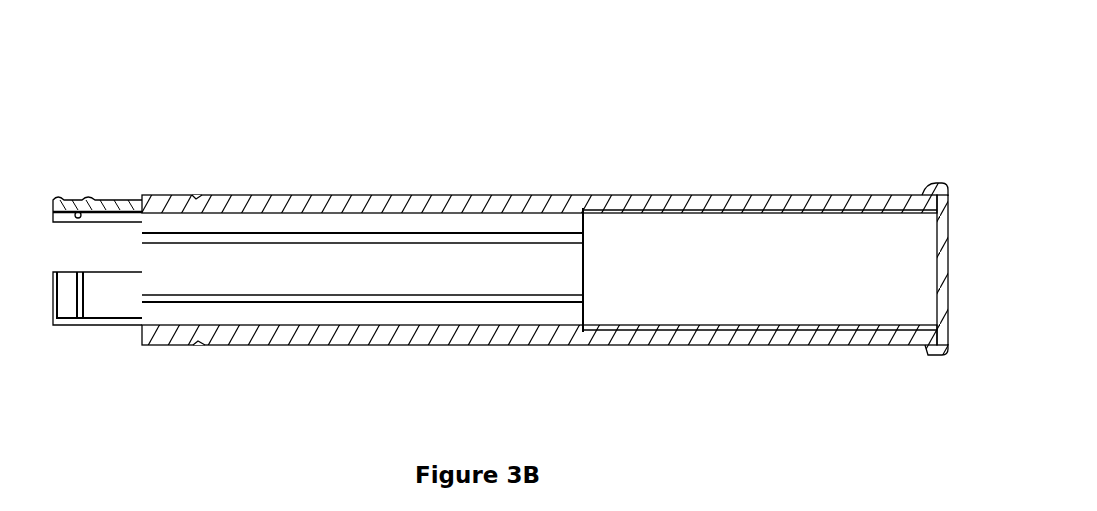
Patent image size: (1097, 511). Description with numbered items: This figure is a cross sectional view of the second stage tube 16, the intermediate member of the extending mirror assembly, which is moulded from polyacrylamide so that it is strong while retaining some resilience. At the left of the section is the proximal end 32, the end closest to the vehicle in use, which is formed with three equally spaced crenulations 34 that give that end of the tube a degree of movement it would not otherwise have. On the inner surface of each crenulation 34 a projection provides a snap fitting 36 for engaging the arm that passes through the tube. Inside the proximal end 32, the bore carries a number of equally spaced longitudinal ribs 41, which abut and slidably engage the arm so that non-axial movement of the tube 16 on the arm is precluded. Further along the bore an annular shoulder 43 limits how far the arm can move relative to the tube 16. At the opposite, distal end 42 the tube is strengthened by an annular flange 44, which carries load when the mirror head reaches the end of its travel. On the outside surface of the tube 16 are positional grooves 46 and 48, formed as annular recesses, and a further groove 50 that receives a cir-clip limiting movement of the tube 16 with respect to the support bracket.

The second stage tube 16 is at (500, 268).
The proximal end 32 is at (539, 285).
The crenulations 34 is at (95, 186).
The snap fitting 36 is at (78, 300).
The longitudinal ribs 41 is at (350, 293).
The distal end 42 is at (862, 270).
The annular shoulder 43 is at (590, 332).
The annular flange 44 is at (938, 362).
The positional groove 46 is at (915, 185).
The positional groove 48 is at (539, 300).
The groove 50 is at (200, 356).